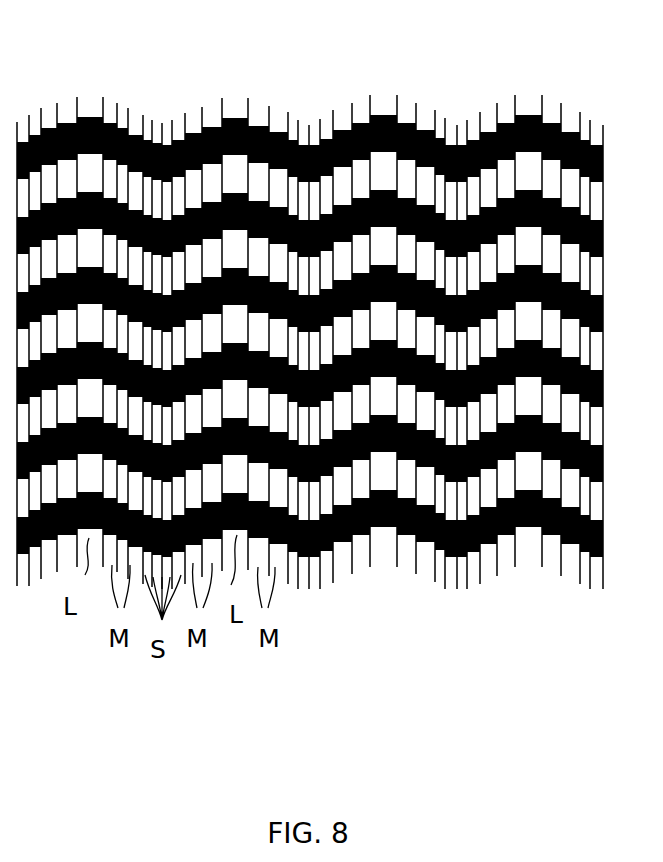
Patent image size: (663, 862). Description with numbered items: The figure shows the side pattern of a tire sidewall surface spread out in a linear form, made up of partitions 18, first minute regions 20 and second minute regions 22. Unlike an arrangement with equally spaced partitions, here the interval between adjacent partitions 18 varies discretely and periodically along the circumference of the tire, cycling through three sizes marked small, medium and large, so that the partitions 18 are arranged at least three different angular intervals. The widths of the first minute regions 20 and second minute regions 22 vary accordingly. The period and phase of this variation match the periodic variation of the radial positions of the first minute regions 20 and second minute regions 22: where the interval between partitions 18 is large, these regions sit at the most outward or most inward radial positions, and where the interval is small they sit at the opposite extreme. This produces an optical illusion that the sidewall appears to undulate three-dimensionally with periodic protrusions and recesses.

The partition 18 is at (102, 110).
The first minute region 20 is at (112, 125).
The second minute region 22 is at (137, 127).